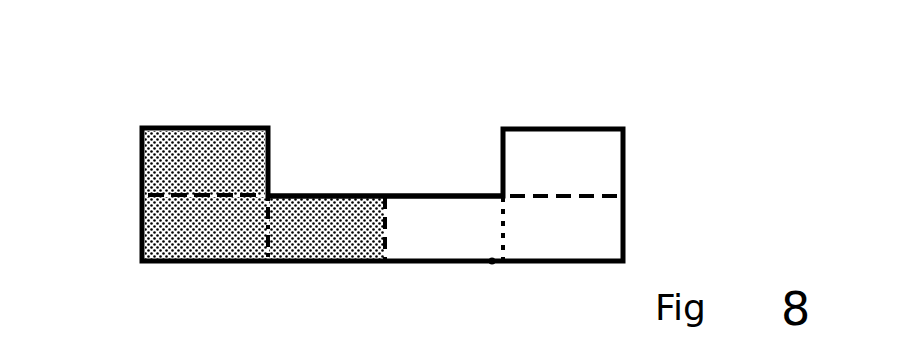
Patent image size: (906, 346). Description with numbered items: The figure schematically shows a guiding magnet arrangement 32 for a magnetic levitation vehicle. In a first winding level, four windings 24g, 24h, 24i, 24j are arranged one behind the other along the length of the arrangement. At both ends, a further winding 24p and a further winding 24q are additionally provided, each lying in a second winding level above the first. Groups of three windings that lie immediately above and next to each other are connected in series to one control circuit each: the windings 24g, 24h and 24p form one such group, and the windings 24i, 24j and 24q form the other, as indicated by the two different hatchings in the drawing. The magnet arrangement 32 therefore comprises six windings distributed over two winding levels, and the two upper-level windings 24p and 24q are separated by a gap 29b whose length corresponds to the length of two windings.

The magnet arrangement 32 is at (138, 174).
The further winding 24p is at (193, 162).
The winding 24g is at (186, 240).
The winding 24h is at (316, 240).
The winding 24i is at (446, 240).
The winding 24j is at (566, 240).
The further winding 24q is at (554, 150).
The gap 29b is at (370, 163).